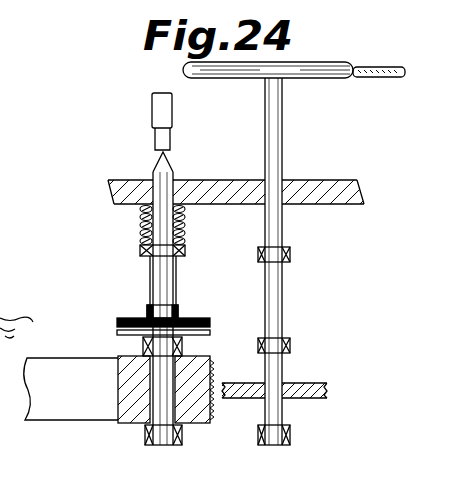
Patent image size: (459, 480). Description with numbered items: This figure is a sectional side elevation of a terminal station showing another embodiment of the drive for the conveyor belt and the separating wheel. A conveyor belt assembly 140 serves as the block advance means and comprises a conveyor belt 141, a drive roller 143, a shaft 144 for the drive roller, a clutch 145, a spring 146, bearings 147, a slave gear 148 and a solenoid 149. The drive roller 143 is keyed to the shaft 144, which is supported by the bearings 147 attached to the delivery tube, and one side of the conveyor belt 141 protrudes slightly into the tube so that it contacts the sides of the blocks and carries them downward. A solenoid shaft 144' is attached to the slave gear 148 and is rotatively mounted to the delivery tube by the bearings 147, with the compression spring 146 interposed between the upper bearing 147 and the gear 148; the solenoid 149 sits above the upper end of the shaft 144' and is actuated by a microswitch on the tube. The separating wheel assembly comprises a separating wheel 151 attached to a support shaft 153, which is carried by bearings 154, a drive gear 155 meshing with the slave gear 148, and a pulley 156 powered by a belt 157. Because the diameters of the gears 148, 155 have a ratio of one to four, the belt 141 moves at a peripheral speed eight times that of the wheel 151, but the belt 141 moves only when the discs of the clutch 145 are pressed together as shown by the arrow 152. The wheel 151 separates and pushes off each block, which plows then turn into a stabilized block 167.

The conveyor belt assembly 140 is at (93, 426).
The conveyor belt 141 is at (81, 401).
The drive roller 143 is at (126, 424).
The shaft 144 is at (164, 326).
The solenoid shaft 144' is at (190, 154).
The clutch 145 is at (117, 325).
The compression spring 146 is at (143, 220).
The bearings 147 is at (176, 311).
The slave gear 148 is at (114, 190).
The solenoid 149 is at (172, 108).
The separating wheel 151 is at (310, 398).
The arrow 152 is at (124, 309).
The support shaft 153 is at (283, 300).
The bearings 154 is at (290, 254).
The drive gear 155 is at (325, 182).
The pulley 156 is at (318, 63).
The belt 157 is at (380, 67).
The stabilized block 167 is at (16, 308).